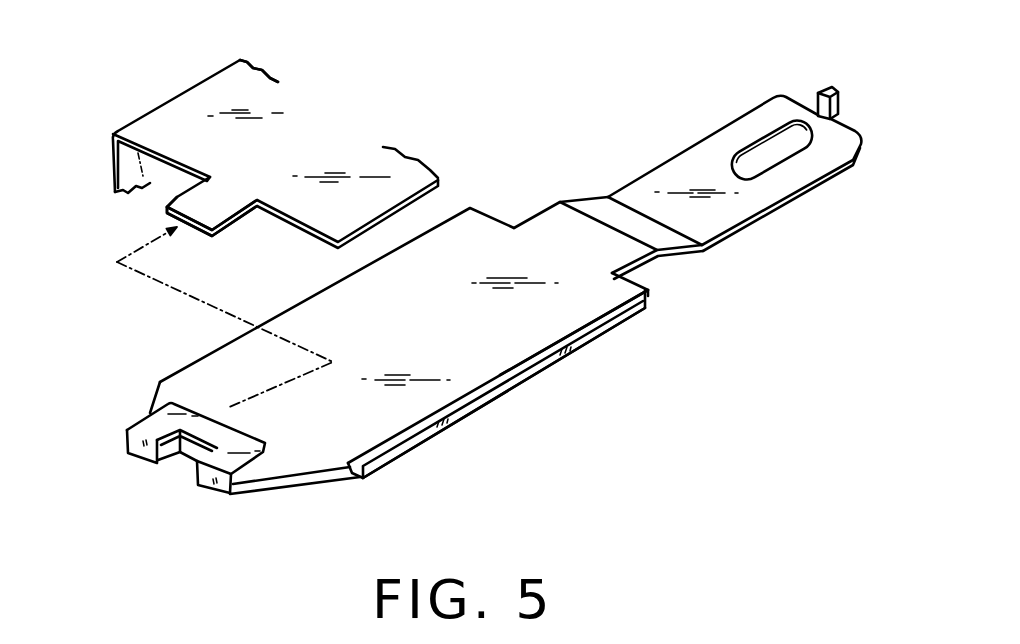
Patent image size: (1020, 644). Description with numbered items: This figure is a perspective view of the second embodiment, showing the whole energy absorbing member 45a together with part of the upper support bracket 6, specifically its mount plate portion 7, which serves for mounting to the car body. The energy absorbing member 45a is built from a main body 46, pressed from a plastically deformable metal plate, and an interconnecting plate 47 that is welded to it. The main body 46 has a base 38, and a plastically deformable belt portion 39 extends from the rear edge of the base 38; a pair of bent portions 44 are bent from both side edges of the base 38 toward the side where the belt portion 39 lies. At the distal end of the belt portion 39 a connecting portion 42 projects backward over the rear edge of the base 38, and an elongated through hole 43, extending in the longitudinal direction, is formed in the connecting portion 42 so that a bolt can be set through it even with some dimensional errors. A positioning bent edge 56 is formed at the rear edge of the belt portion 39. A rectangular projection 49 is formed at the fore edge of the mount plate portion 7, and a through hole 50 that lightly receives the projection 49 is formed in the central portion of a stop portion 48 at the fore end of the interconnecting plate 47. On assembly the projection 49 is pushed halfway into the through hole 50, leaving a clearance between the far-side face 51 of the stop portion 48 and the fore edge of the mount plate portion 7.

The upper support bracket 6 is at (158, 125).
The mount plate portion 7 is at (232, 83).
The rectangular projection 49 is at (190, 198).
The belt portion 39 is at (760, 362).
The bent portion 44 is at (518, 383).
The main body 46 is at (462, 430).
The interconnecting plate 47 is at (567, 322).
The base 38 is at (353, 477).
The stop portion 48 is at (150, 416).
The through hole 50 is at (150, 413).
The far-side face 51 is at (173, 463).
The energy absorbing member 45a is at (587, 190).
The connecting portion 42 is at (753, 200).
The through hole 43 is at (795, 152).
The positioning bent edge 56 is at (833, 90).